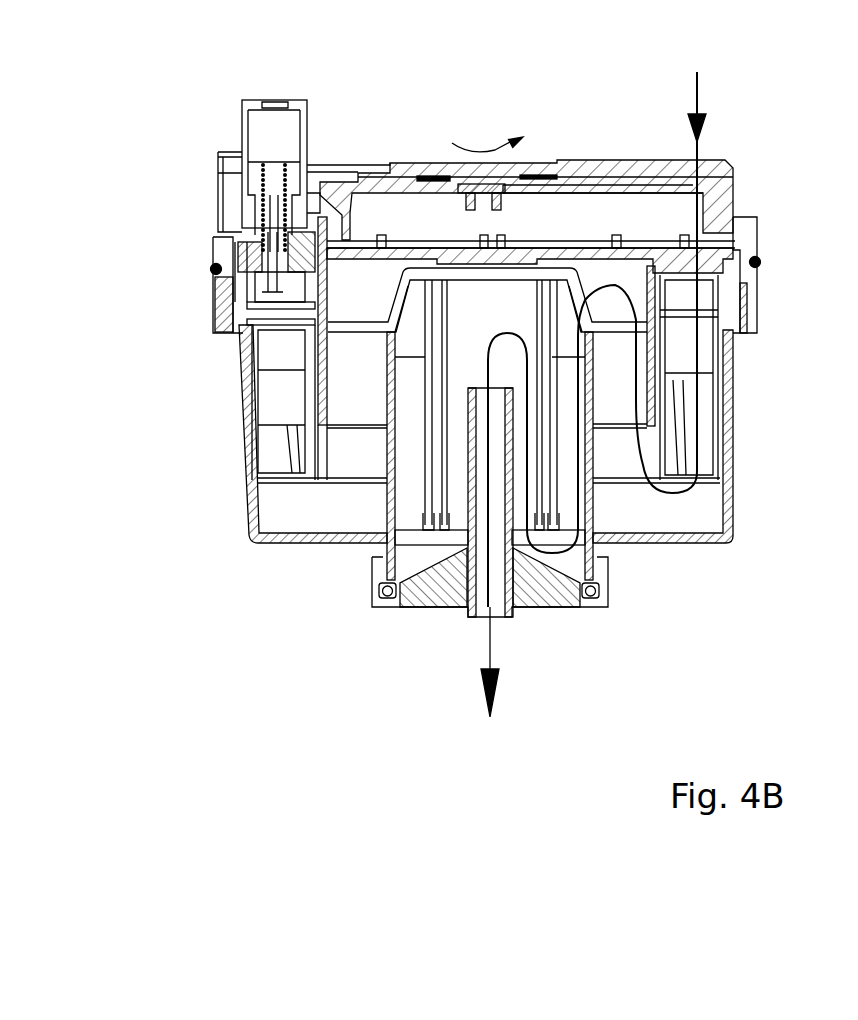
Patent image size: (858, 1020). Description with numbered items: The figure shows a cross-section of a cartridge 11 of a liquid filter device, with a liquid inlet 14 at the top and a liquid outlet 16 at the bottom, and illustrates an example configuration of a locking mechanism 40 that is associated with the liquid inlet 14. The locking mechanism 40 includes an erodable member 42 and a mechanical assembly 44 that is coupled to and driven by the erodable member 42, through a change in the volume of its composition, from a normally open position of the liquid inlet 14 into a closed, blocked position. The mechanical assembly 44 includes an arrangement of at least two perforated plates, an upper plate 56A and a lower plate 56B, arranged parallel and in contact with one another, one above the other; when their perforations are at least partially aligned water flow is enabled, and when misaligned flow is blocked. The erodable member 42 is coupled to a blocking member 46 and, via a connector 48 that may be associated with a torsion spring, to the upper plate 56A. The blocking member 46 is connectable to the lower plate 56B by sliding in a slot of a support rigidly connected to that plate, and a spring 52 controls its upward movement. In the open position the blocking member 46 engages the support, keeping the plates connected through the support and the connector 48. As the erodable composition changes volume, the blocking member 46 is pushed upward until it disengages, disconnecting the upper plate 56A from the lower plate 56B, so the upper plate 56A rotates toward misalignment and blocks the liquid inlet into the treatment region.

The cartridge 11 is at (733, 437).
The liquid inlet 14 is at (703, 125).
The liquid outlet 16 is at (495, 610).
The locking mechanism 40 is at (328, 130).
The erodable member 42 is at (263, 143).
The mechanical assembly 44 is at (248, 213).
The blocking member 46 is at (255, 280).
The connector 48 is at (334, 165).
The spring 52 is at (272, 186).
The upper plate 56A is at (663, 168).
The plate 56B is at (613, 168).